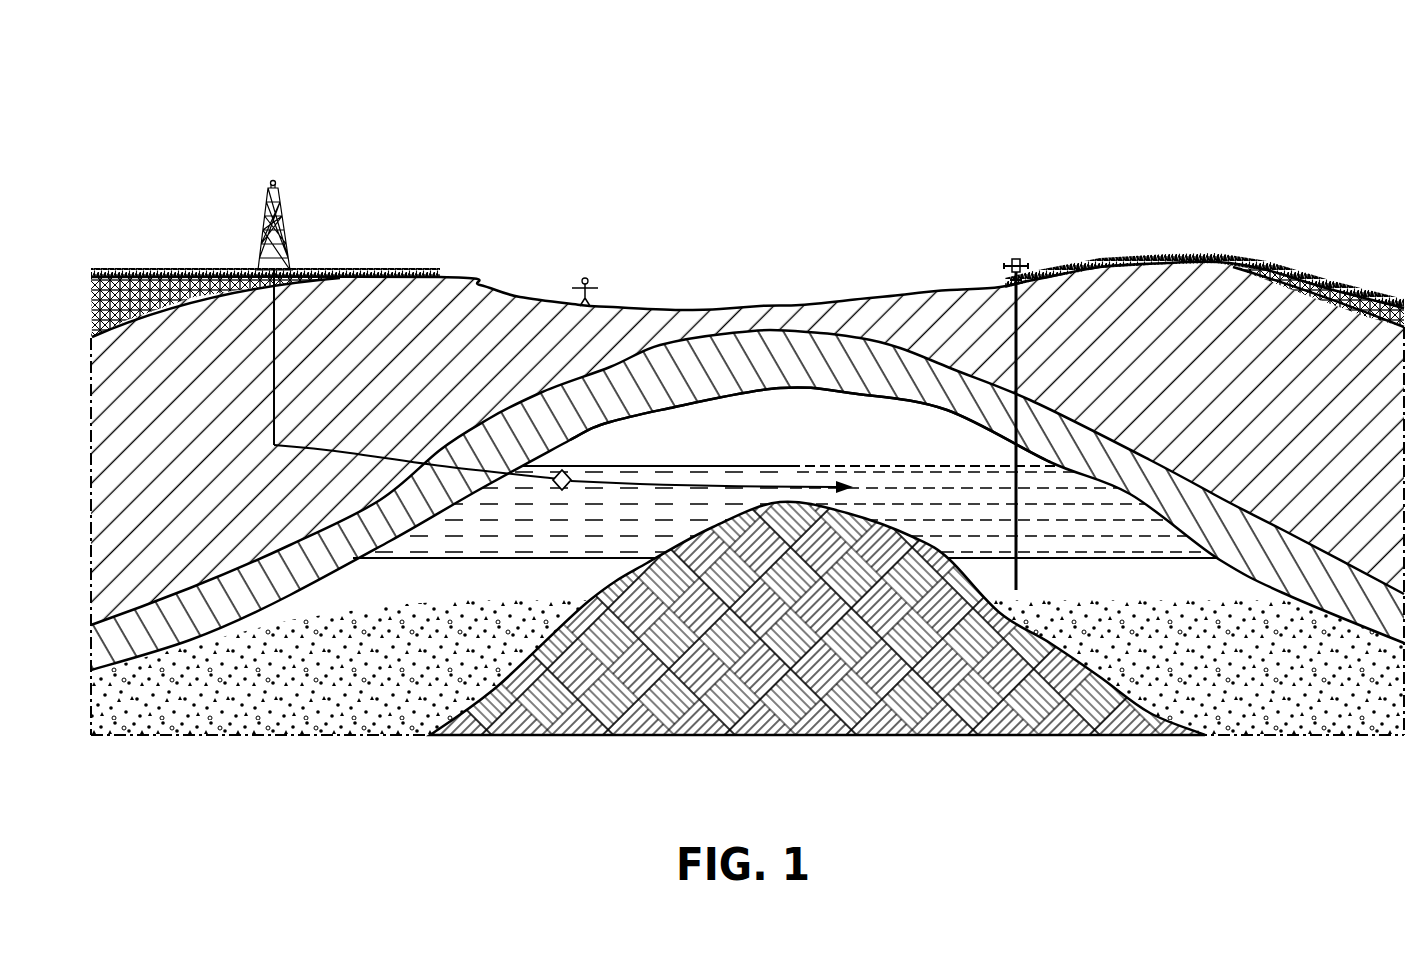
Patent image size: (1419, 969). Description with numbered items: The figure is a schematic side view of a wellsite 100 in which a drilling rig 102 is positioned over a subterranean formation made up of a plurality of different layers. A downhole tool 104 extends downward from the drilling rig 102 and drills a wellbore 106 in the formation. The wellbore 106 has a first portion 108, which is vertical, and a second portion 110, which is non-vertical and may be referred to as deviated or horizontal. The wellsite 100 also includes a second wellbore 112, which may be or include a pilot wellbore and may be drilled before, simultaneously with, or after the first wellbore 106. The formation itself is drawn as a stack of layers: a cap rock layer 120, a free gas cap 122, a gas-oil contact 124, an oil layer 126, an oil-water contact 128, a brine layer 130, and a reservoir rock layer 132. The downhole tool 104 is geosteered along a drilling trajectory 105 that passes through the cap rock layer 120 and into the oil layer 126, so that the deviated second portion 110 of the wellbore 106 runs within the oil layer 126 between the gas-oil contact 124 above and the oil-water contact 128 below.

The wellsite 100 is at (124, 62).
The drilling rig 102 is at (268, 199).
The downhole tool 104 is at (562, 470).
The drilling trajectory 105 is at (733, 480).
The wellbore 106 is at (270, 318).
The first portion 108 is at (272, 410).
The second portion 110 is at (275, 447).
The second wellbore 112 is at (1017, 262).
The cap rock layer 120 is at (1250, 533).
The free gas cap 122 is at (815, 415).
The gas-oil contact 124 is at (848, 464).
The oil layer 126 is at (1067, 510).
The oil-water contact 128 is at (470, 557).
The brine layer 130 is at (448, 600).
The reservoir rock layer 132 is at (240, 717).